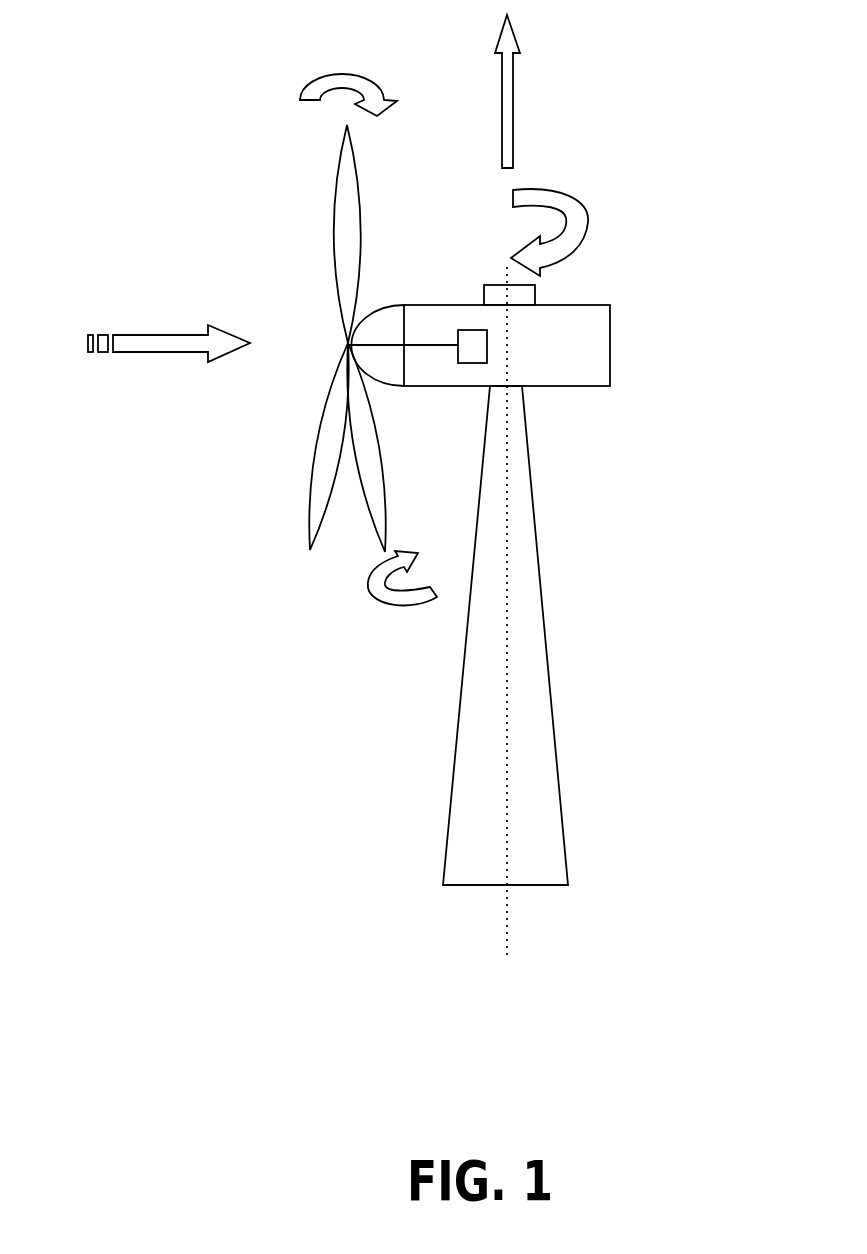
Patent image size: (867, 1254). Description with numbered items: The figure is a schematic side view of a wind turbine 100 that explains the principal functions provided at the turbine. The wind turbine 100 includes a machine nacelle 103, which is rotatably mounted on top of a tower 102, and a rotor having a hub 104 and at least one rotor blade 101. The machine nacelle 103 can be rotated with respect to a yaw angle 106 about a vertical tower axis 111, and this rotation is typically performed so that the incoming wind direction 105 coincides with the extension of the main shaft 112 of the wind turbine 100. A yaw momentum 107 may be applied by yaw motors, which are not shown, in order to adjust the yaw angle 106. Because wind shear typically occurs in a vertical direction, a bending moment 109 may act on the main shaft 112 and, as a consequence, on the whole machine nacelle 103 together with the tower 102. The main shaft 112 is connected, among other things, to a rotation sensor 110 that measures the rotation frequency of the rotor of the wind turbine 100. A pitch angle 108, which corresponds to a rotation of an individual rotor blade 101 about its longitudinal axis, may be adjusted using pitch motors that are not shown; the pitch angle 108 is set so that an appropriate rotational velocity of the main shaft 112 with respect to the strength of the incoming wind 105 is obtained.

The wind turbine 100 is at (675, 92).
The rotor blade 101 is at (335, 255).
The tower 102 is at (552, 665).
The machine nacelle 103 is at (610, 347).
The hub 104 is at (395, 300).
The incoming wind direction 105 is at (210, 353).
The yaw angle 106 is at (587, 232).
The yaw momentum 107 is at (498, 72).
The pitch angle 108 is at (370, 595).
The bending moment 109 is at (302, 98).
The rotation sensor 110 is at (472, 363).
The vertical tower axis 111 is at (507, 925).
The main shaft 112 is at (411, 343).